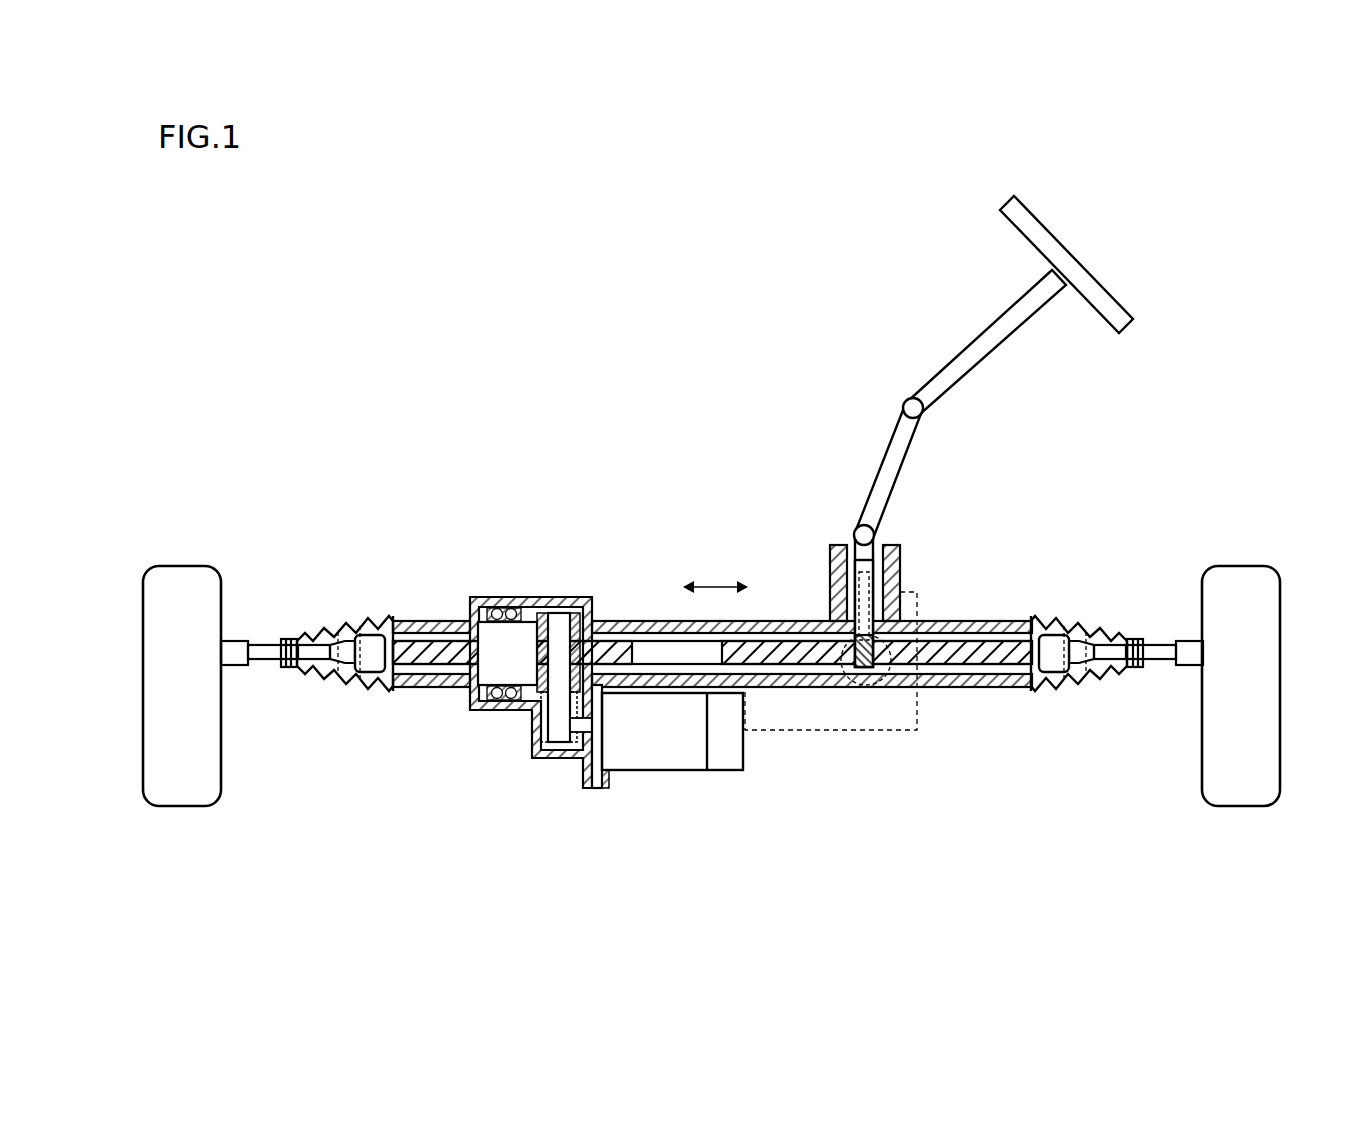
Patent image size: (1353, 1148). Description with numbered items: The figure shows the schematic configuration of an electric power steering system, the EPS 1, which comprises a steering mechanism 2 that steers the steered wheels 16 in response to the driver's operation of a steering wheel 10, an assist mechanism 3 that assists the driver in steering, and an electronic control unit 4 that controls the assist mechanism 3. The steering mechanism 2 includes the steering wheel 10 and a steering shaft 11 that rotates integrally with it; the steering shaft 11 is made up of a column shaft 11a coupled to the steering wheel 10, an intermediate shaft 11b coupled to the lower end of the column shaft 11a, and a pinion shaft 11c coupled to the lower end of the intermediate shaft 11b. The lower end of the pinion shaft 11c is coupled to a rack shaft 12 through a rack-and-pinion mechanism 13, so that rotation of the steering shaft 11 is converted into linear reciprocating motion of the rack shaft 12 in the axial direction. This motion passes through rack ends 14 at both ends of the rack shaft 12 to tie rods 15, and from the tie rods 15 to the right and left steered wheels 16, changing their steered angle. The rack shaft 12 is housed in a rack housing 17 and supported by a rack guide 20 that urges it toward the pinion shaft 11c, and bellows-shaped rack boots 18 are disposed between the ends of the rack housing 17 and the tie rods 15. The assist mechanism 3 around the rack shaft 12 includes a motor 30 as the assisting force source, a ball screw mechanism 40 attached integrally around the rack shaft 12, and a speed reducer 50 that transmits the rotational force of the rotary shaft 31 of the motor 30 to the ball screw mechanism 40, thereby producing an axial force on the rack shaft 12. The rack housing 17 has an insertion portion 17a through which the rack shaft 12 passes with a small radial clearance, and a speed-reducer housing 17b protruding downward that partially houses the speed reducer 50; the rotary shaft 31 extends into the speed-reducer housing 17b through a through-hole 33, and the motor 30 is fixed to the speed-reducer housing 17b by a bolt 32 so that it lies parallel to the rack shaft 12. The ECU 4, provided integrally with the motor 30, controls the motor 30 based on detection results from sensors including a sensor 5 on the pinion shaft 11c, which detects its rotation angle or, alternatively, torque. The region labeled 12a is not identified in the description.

The electric power steering system 1 is at (716, 320).
The steering mechanism 2 is at (1092, 392).
The assist mechanism 3 is at (606, 590).
The electronic control unit 4 is at (672, 764).
The sensor 5 is at (884, 590).
The steering wheel 10 is at (1044, 220).
The steering shaft 11 is at (870, 365).
The column shaft 11a is at (927, 380).
The intermediate shaft 11b is at (880, 462).
The pinion shaft 11c is at (832, 547).
The rack shaft 12 is at (712, 641).
The ball screw portion 12a is at (447, 640).
The rack-and-pinion mechanism 13 is at (870, 677).
The rack end 14 is at (357, 676).
The tie rod 15 is at (283, 666).
The steered wheel 16 is at (181, 566).
The rack housing 17 is at (712, 698).
The insertion portion 17a is at (932, 684).
The speed-reducer housing 17b is at (527, 758).
The rack boot 18 is at (361, 621).
The rack guide 20 is at (843, 673).
The motor 30 is at (672, 778).
The rotary shaft 31 is at (596, 742).
The bolt 32 is at (608, 782).
The through-hole 33 is at (586, 708).
The ball screw mechanism 40 is at (470, 680).
The speed reducer 50 is at (537, 705).